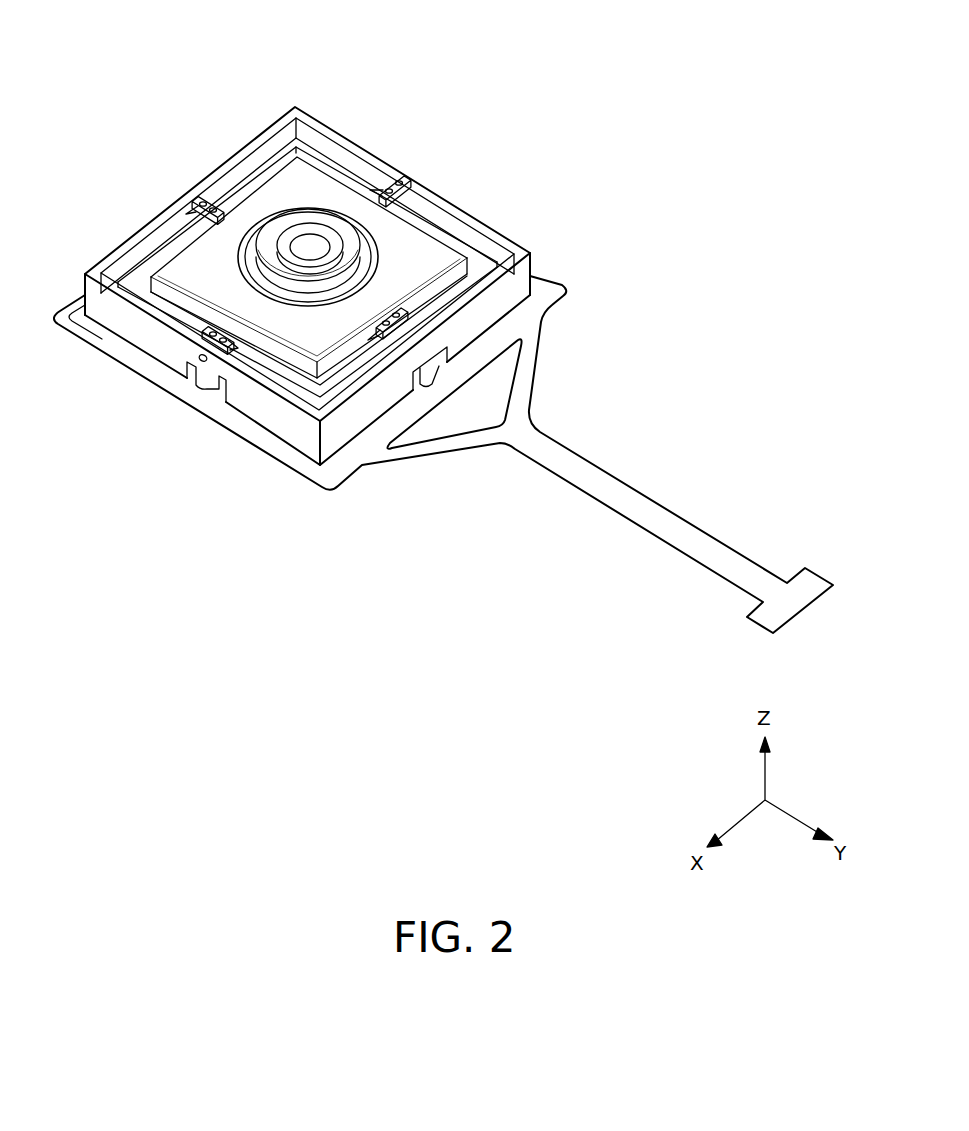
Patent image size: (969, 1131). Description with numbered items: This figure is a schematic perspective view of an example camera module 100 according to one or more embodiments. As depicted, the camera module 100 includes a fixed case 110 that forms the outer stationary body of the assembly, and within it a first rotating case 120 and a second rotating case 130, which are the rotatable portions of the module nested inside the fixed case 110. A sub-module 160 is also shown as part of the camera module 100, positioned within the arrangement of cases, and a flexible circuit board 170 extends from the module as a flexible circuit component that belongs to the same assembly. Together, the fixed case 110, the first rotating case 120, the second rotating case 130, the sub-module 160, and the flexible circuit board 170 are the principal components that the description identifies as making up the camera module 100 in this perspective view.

The camera module 100 is at (505, 31).
The fixed case 110 is at (515, 292).
The first rotating case 120 is at (472, 278).
The second rotating case 130 is at (453, 280).
The sub-module 160 is at (382, 215).
The flexible circuit board 170 is at (623, 500).